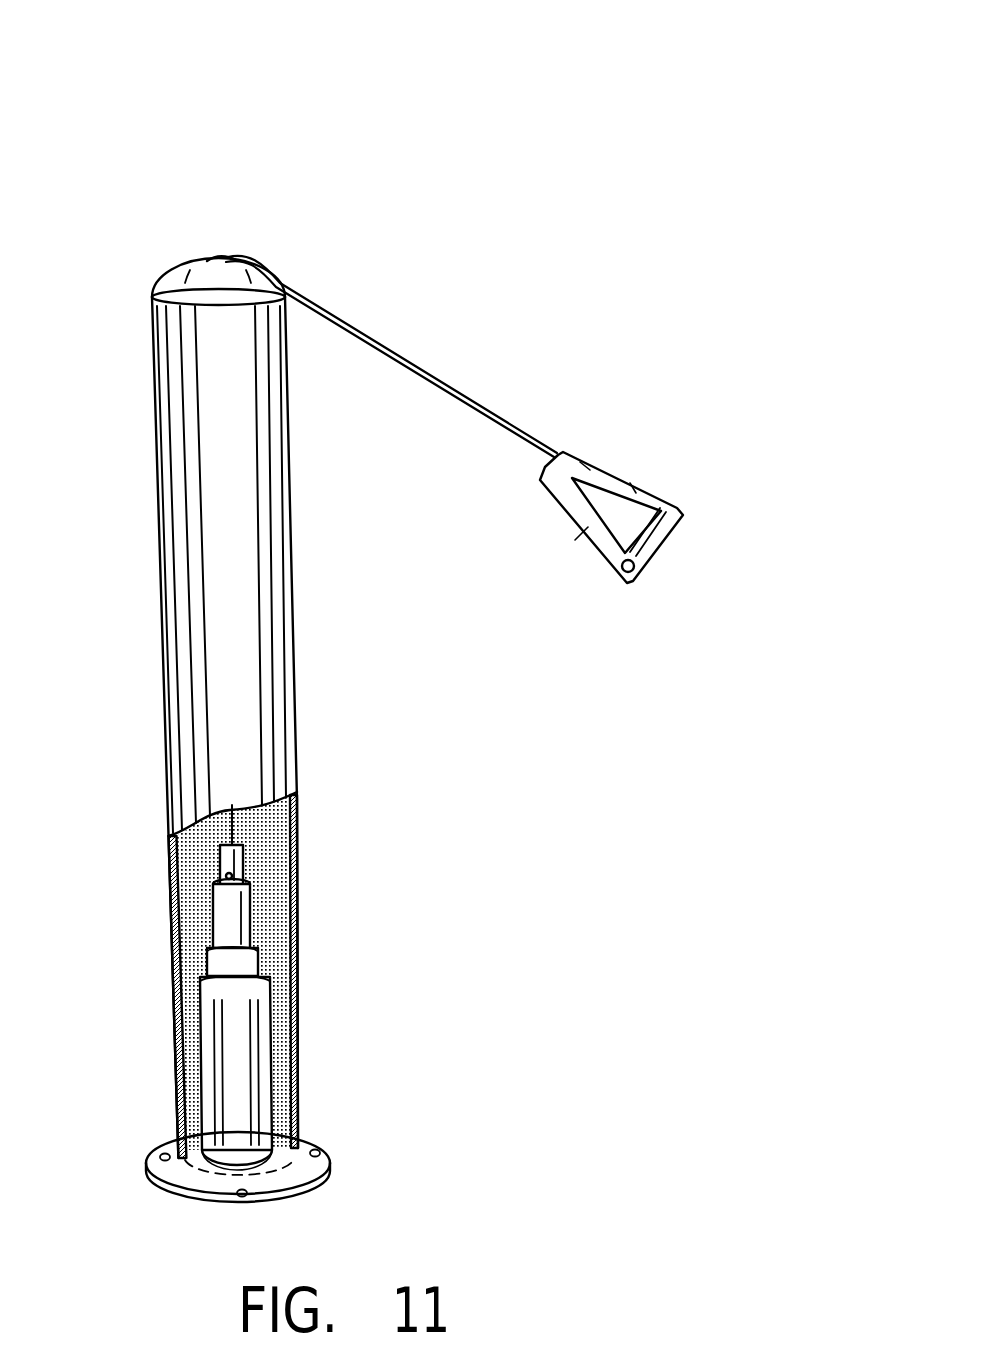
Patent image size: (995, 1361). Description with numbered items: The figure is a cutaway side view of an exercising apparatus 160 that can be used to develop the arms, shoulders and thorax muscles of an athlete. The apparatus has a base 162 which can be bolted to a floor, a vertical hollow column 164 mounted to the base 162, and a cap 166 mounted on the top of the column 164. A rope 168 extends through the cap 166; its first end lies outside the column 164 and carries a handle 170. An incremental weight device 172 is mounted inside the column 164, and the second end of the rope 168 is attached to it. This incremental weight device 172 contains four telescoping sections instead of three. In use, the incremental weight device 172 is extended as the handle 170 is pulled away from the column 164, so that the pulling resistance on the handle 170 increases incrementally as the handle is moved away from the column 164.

The exercising apparatus 160 is at (612, 128).
The base 162 is at (323, 1145).
The vertical hollow column 164 is at (158, 522).
The cap 166 is at (178, 268).
The rope 168 is at (367, 333).
The handle 170 is at (665, 490).
The incremental weight device 172 is at (298, 1047).